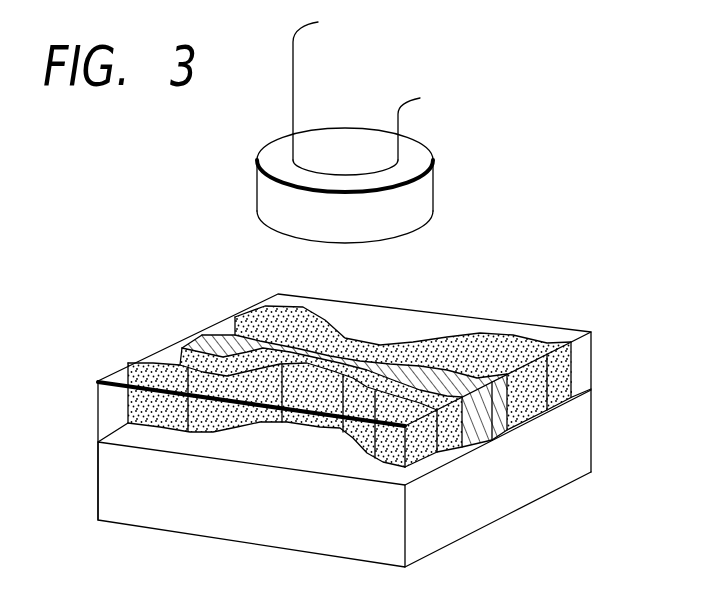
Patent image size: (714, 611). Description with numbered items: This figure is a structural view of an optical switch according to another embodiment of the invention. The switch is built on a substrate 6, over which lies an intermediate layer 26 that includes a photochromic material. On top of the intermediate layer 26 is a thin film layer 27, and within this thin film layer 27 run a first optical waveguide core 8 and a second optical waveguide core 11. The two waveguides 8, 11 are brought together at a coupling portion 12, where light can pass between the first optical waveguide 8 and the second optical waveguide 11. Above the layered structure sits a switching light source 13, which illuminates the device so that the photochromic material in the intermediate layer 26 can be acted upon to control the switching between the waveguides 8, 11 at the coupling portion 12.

The substrate 6 is at (155, 508).
The first optical waveguide (core) 8 is at (450, 450).
The second optical waveguide (core) 11 is at (570, 413).
The coupling portion 12 is at (353, 298).
The switching light source 13 is at (378, 138).
The intermediate layer 26 is at (203, 330).
The thin film layer 27 is at (583, 362).